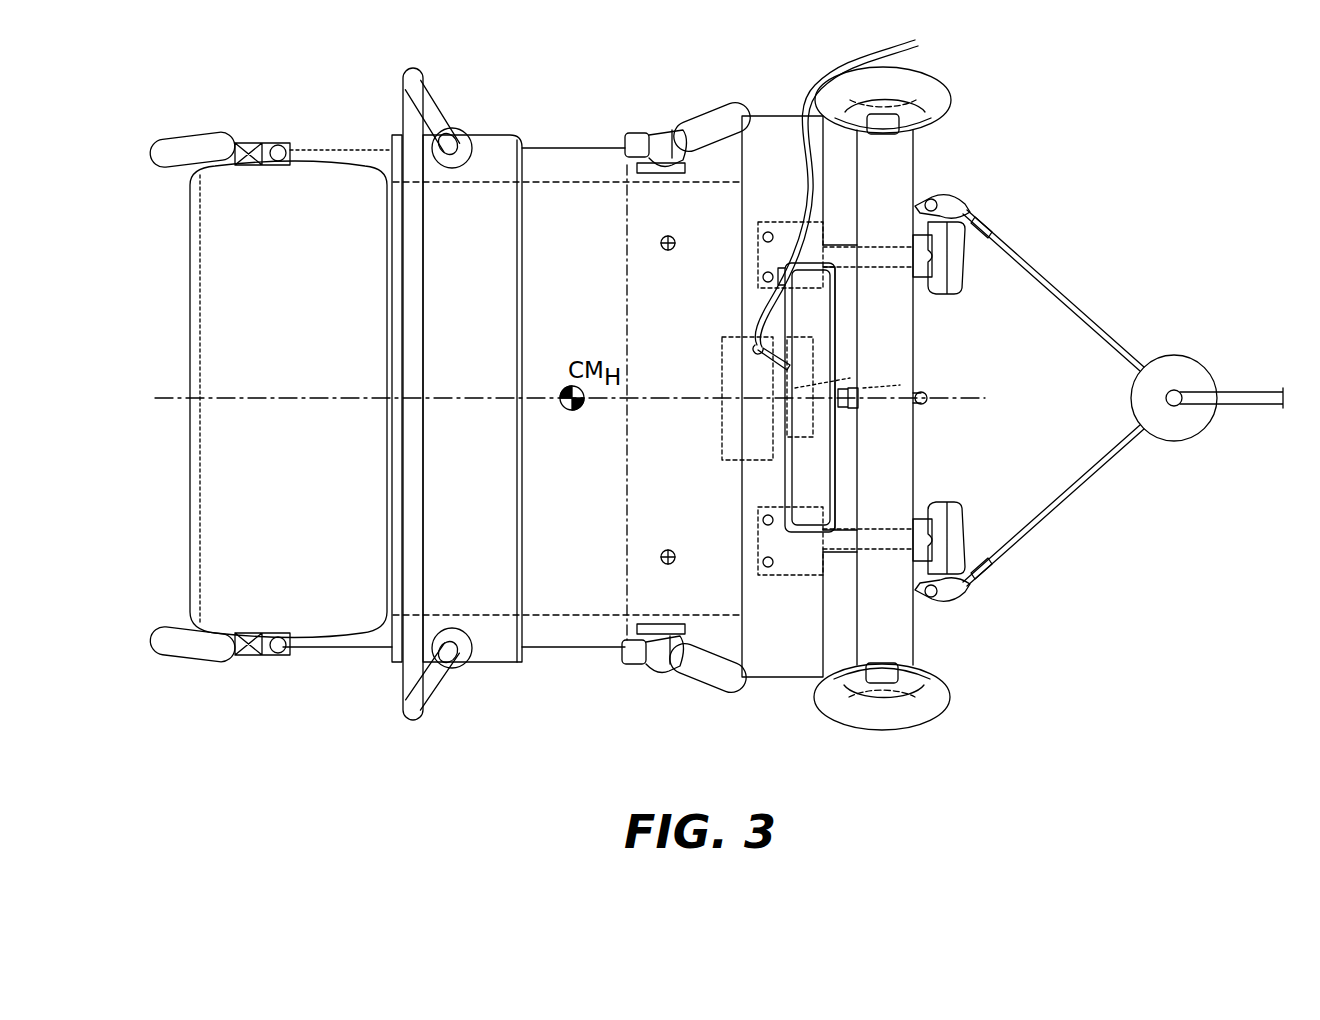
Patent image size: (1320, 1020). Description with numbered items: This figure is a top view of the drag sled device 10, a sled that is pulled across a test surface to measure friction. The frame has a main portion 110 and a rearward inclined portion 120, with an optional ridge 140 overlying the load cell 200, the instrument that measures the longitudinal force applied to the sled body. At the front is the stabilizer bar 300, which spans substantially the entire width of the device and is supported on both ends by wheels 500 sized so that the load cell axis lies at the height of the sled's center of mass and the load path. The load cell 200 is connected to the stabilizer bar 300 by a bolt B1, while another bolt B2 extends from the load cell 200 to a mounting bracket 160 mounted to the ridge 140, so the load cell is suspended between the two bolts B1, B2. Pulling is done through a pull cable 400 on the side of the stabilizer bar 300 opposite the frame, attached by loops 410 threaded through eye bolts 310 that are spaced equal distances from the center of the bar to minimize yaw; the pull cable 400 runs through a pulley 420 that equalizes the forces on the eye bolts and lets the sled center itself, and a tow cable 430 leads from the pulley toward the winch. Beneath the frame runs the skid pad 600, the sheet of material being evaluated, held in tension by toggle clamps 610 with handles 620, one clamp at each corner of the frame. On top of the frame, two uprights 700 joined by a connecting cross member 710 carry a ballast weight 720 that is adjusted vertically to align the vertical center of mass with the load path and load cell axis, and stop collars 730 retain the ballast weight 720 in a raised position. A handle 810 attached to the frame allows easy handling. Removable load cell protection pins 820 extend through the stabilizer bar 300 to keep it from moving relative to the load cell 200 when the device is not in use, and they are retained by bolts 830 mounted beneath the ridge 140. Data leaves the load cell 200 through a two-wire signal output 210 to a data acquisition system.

The drag sled device 10 is at (985, 72).
The main portion 110 is at (538, 647).
The inclined portion 120 is at (336, 150).
The ridge 140 is at (782, 116).
The mounting bracket 160 is at (790, 460).
The load cell 200 is at (780, 434).
The two-wire signal output 210 is at (848, 62).
The stabilizer bar 300 is at (895, 443).
The eye bolts 310 is at (925, 200).
The pull cable 400 is at (1060, 528).
The loops 410 is at (945, 200).
The pulley 420 is at (1190, 430).
The tow cable 430 is at (1250, 410).
The wheels 500 is at (945, 97).
The skid pad 600 is at (205, 356).
The toggle clamps 610 is at (268, 140).
The handles 620 is at (176, 146).
The uprights 700 is at (442, 118).
The connecting cross member 710 is at (398, 95).
The ballast weight 720 is at (496, 140).
The stop collars 730 is at (462, 168).
The handle 810 is at (825, 297).
The load cell protection pins 820 is at (900, 258).
The bolts 830 is at (770, 232).
The bolt B1 is at (900, 385).
The bolt B2 is at (850, 378).